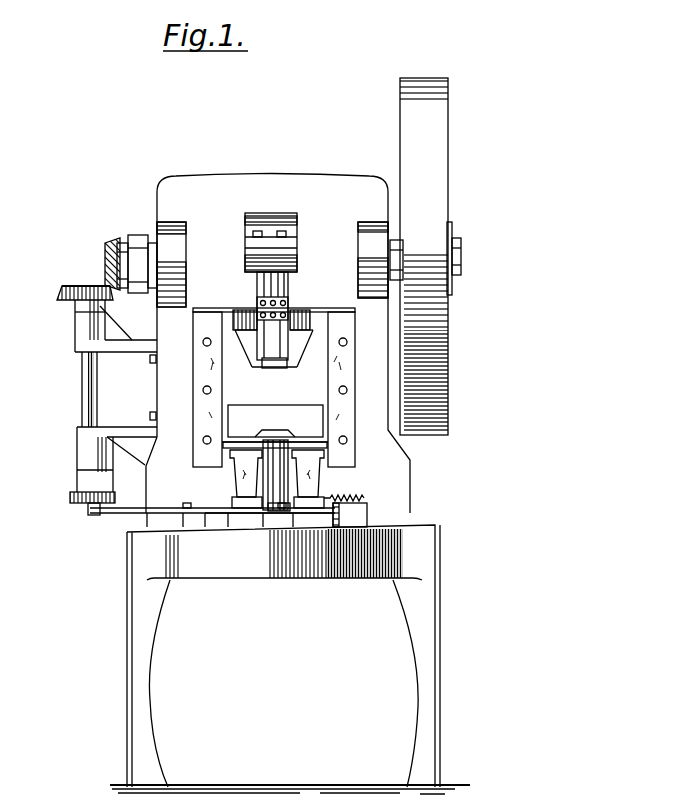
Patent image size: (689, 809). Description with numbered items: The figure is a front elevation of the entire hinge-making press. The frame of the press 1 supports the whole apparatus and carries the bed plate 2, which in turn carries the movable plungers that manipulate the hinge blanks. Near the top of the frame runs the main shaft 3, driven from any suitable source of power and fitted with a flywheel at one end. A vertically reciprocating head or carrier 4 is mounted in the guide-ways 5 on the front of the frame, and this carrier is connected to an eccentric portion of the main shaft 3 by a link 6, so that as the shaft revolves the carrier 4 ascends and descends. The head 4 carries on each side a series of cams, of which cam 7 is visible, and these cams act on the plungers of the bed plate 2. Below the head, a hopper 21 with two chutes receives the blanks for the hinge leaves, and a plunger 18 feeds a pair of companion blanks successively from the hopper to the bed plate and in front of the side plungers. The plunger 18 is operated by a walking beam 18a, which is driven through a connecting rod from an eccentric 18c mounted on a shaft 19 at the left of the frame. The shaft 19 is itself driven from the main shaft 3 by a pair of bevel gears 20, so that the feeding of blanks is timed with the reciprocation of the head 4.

The frame of the press 1 is at (423, 550).
The bed plate 2 is at (345, 511).
The main shaft 3 is at (461, 253).
The vertically reciprocating head or carrier 4 is at (275, 376).
The guide-ways 5 is at (207, 369).
The link 6 is at (288, 281).
The cam 7 is at (250, 478).
The plunger 18 is at (280, 505).
The walking beam 18a is at (190, 508).
The eccentric 18c is at (70, 497).
The shaft 19 is at (84, 402).
The bevel gears 20 is at (104, 258).
The hopper 21 is at (283, 470).